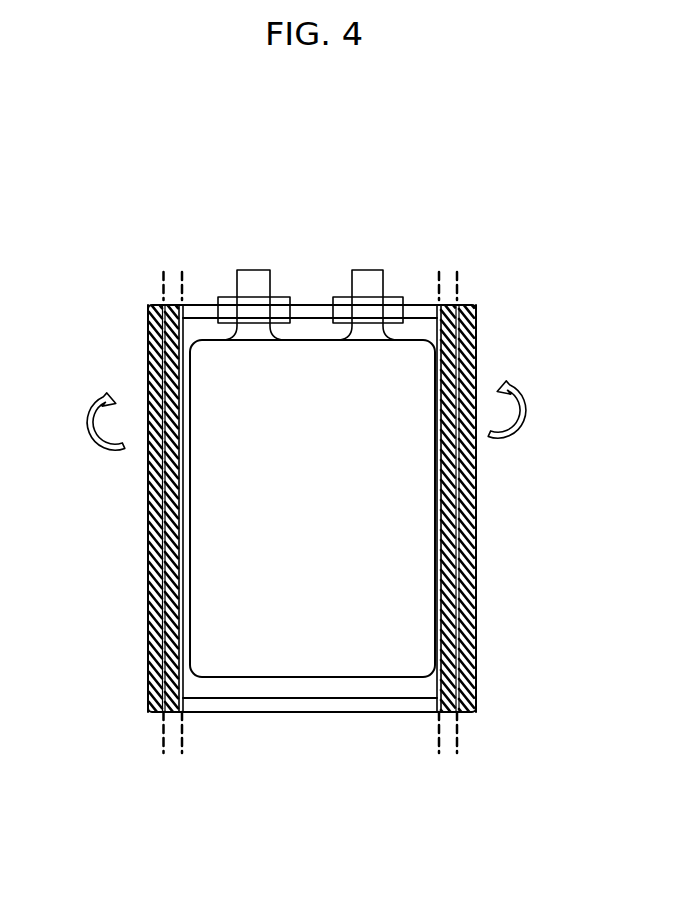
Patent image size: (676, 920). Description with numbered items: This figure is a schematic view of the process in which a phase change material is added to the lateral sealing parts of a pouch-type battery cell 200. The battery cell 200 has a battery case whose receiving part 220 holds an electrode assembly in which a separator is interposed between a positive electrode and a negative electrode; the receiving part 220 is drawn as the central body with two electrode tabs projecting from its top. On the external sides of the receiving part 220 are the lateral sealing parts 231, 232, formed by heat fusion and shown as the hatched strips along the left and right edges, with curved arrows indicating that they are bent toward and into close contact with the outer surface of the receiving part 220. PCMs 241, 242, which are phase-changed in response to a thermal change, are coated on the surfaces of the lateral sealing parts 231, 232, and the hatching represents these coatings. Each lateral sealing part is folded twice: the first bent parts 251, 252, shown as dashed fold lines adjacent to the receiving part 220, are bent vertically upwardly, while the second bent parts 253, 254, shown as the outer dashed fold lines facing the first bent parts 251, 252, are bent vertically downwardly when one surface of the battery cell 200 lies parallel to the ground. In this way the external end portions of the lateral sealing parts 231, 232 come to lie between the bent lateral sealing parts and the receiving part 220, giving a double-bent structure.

The battery cell 200 is at (102, 177).
The receiving part 220 is at (302, 360).
The lateral sealing part 231 is at (128, 487).
The lateral sealing part 232 is at (488, 512).
The PCM 241 is at (150, 306).
The PCM 242 is at (470, 307).
The first bent part 251 is at (183, 742).
The first bent part 252 is at (438, 740).
The second bent part 253 is at (163, 725).
The second bent part 254 is at (458, 722).